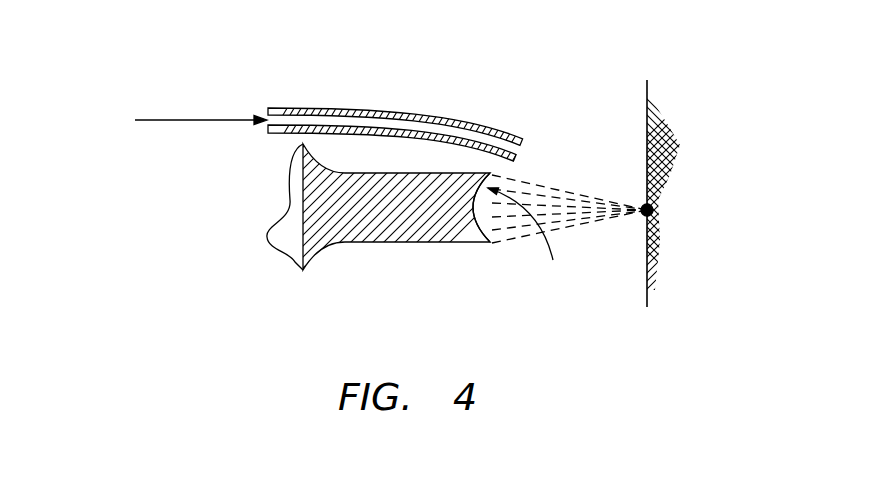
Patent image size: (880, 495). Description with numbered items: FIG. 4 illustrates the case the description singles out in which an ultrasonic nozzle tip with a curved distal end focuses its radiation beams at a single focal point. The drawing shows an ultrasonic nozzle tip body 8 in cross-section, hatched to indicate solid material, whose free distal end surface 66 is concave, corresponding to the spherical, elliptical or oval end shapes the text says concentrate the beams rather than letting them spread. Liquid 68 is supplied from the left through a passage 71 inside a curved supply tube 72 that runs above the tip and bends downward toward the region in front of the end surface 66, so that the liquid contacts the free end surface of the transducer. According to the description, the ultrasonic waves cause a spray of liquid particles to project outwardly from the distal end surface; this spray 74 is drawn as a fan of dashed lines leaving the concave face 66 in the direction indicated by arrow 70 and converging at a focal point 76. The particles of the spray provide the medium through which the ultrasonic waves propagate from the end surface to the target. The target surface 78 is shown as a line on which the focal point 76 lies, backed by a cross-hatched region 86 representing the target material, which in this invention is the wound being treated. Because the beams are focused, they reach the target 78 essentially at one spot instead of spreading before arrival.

The nozzle body 8 is at (382, 243).
The concave discharge face 66 is at (445, 215).
The liquid supply 68 is at (185, 120).
The spray direction 70 is at (530, 237).
The liquid passage 71 is at (332, 123).
The curved supply tube 72 is at (477, 113).
The spray pattern 74 is at (585, 198).
The focal point 76 is at (645, 216).
The target surface 78 is at (649, 290).
The wall 86 is at (675, 148).